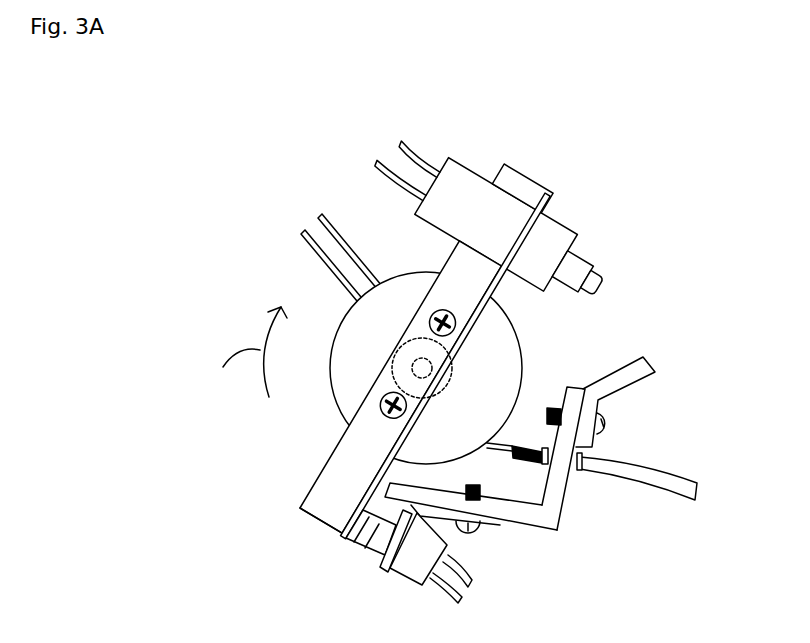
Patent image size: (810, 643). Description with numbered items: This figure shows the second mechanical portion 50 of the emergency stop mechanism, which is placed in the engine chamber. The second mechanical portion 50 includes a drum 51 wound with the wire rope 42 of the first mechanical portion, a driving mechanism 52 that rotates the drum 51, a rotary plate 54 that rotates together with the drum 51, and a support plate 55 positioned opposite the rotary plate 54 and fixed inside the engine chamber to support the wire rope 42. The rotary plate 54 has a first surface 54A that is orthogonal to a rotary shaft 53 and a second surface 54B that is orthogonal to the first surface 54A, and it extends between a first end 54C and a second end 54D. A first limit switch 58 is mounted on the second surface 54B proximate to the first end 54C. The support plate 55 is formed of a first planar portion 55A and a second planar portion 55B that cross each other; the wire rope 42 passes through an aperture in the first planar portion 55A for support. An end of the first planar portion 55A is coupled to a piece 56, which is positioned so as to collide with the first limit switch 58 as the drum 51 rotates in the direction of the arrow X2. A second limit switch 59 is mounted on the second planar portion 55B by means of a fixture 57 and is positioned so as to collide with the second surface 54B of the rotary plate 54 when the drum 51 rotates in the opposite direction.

The second mechanical portion 50 is at (662, 188).
The drum 51 is at (358, 335).
The driving mechanism 52 is at (433, 367).
The rotary shaft 53 is at (421, 360).
The rotary plate 54 is at (505, 150).
The first surface 54A is at (400, 387).
The second surface 54B is at (446, 366).
The first end 54C is at (522, 188).
The second end 54D is at (321, 520).
The support plate 55 is at (572, 543).
The first planar portion 55A is at (557, 488).
The second planar portion 55B is at (508, 510).
The piece 56 is at (630, 375).
The fixture 57 is at (491, 525).
The first limit switch 58 is at (579, 275).
The second limit switch 59 is at (360, 543).
The wire rope 42 is at (497, 444).